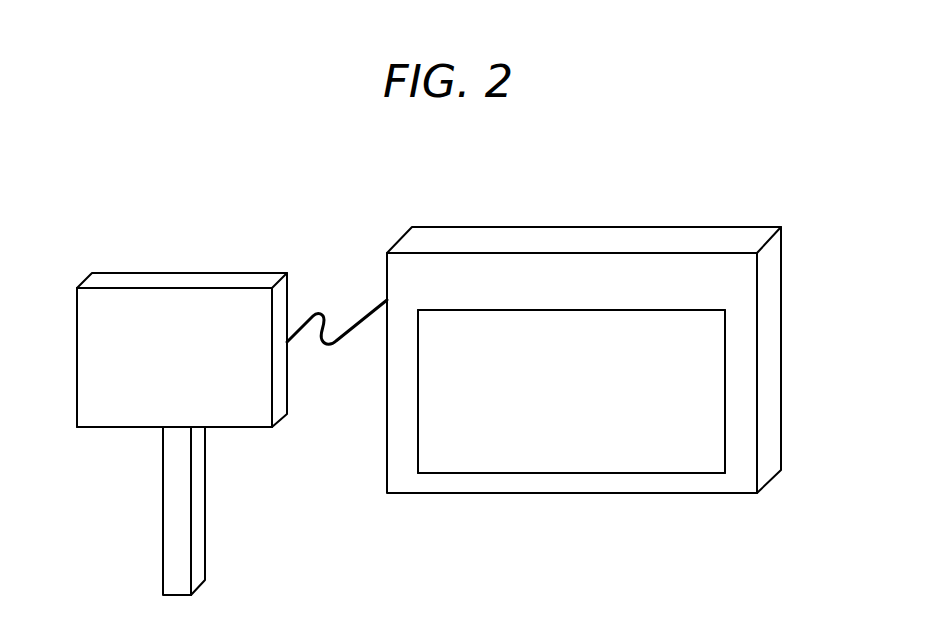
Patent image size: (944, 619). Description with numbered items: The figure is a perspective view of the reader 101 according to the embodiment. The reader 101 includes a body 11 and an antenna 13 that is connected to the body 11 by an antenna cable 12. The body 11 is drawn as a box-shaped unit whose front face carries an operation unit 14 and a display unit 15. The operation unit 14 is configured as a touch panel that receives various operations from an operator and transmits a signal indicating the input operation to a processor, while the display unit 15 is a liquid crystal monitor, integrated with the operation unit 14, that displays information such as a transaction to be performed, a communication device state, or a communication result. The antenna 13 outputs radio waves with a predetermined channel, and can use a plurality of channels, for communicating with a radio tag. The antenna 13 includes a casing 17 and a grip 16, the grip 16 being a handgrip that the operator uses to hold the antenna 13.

The reader 101 is at (598, 204).
The body 11 is at (724, 227).
The antenna cable 12 is at (344, 331).
The antenna 13 is at (236, 273).
The operation unit 14 is at (711, 378).
The display unit 15 is at (571, 391).
The grip 16 is at (206, 498).
The casing 17 is at (88, 353).